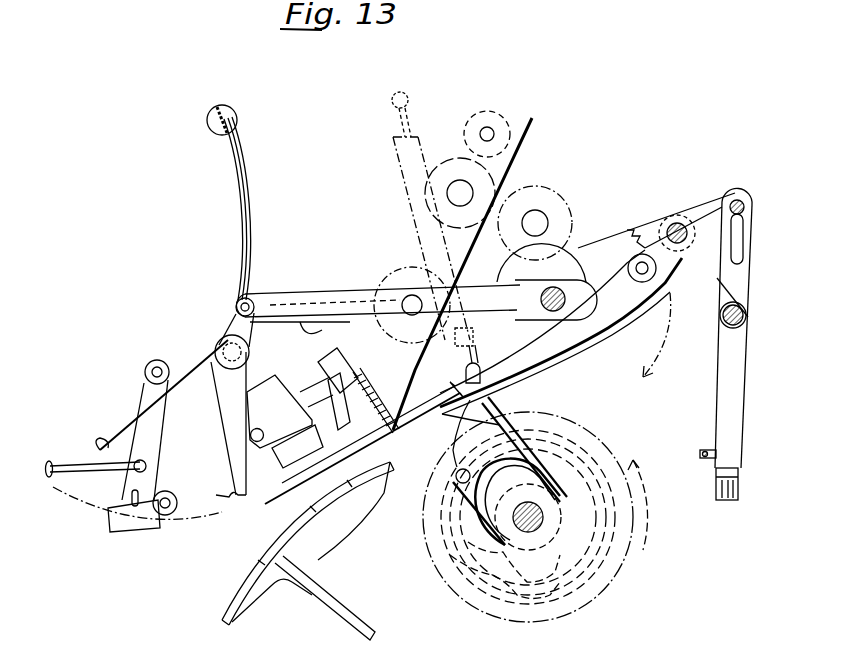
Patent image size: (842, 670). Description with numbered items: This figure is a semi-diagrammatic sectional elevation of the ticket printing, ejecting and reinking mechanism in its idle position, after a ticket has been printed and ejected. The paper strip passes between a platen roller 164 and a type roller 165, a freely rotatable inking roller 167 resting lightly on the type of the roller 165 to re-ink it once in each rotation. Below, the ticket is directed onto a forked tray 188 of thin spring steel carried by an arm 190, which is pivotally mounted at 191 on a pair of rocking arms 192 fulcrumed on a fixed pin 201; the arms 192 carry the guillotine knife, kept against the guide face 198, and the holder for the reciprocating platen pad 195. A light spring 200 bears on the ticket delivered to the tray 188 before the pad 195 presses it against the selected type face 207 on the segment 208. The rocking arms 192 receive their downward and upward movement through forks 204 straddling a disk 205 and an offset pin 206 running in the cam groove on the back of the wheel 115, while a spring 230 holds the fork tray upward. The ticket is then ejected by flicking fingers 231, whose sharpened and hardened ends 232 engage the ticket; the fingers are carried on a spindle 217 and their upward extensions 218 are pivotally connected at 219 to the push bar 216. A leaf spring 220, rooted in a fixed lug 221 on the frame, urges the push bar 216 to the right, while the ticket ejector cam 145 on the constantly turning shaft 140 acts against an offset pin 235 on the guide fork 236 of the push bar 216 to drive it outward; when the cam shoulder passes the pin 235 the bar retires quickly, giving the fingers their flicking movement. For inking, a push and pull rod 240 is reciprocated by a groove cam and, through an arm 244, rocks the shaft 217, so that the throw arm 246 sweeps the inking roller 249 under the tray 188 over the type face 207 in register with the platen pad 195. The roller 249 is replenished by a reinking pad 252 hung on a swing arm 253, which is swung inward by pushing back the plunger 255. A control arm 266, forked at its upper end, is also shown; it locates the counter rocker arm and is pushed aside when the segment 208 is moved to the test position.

The fixed lug 221 is at (208, 122).
The leaf spring 220 is at (248, 166).
The pivot connection 219 is at (239, 302).
The push bar 216 is at (368, 294).
The push and pull rod 240 is at (333, 295).
The arm 244 is at (292, 294).
The spring 230 is at (433, 228).
The printing segment 208 is at (392, 100).
The inking roller 167 is at (502, 118).
The type roller 165 is at (520, 152).
The platen roller 164 is at (512, 195).
The offset pin 235 is at (573, 212).
The ticket ejector cam 145 is at (555, 275).
The guide fork 236 is at (582, 262).
The shaft 140 is at (572, 285).
The fixed pin 201 is at (690, 212).
The control arm 266 is at (720, 386).
The arm 190 is at (555, 348).
The rocking arms 192 is at (552, 372).
The pivot 191 is at (650, 283).
The forks 204 is at (563, 487).
The disk 205 is at (560, 519).
The wheel 115 is at (643, 541).
The platen pad 195 is at (270, 467).
The light spring 200 is at (380, 433).
The guide face 198 is at (358, 379).
The flicking fingers 231 is at (233, 441).
The finger ends 232 is at (224, 496).
The spindle 217 is at (215, 349).
The upward extensions 218 is at (228, 328).
The throw arm 246 is at (180, 396).
The swing arm 253 is at (148, 418).
The plunger 255 is at (77, 464).
The reinking pad 252 is at (100, 517).
The inking roller 249 is at (168, 515).
The forked tray 188 is at (298, 440).
The offset pin 206 is at (455, 483).
The type face 207 is at (286, 536).